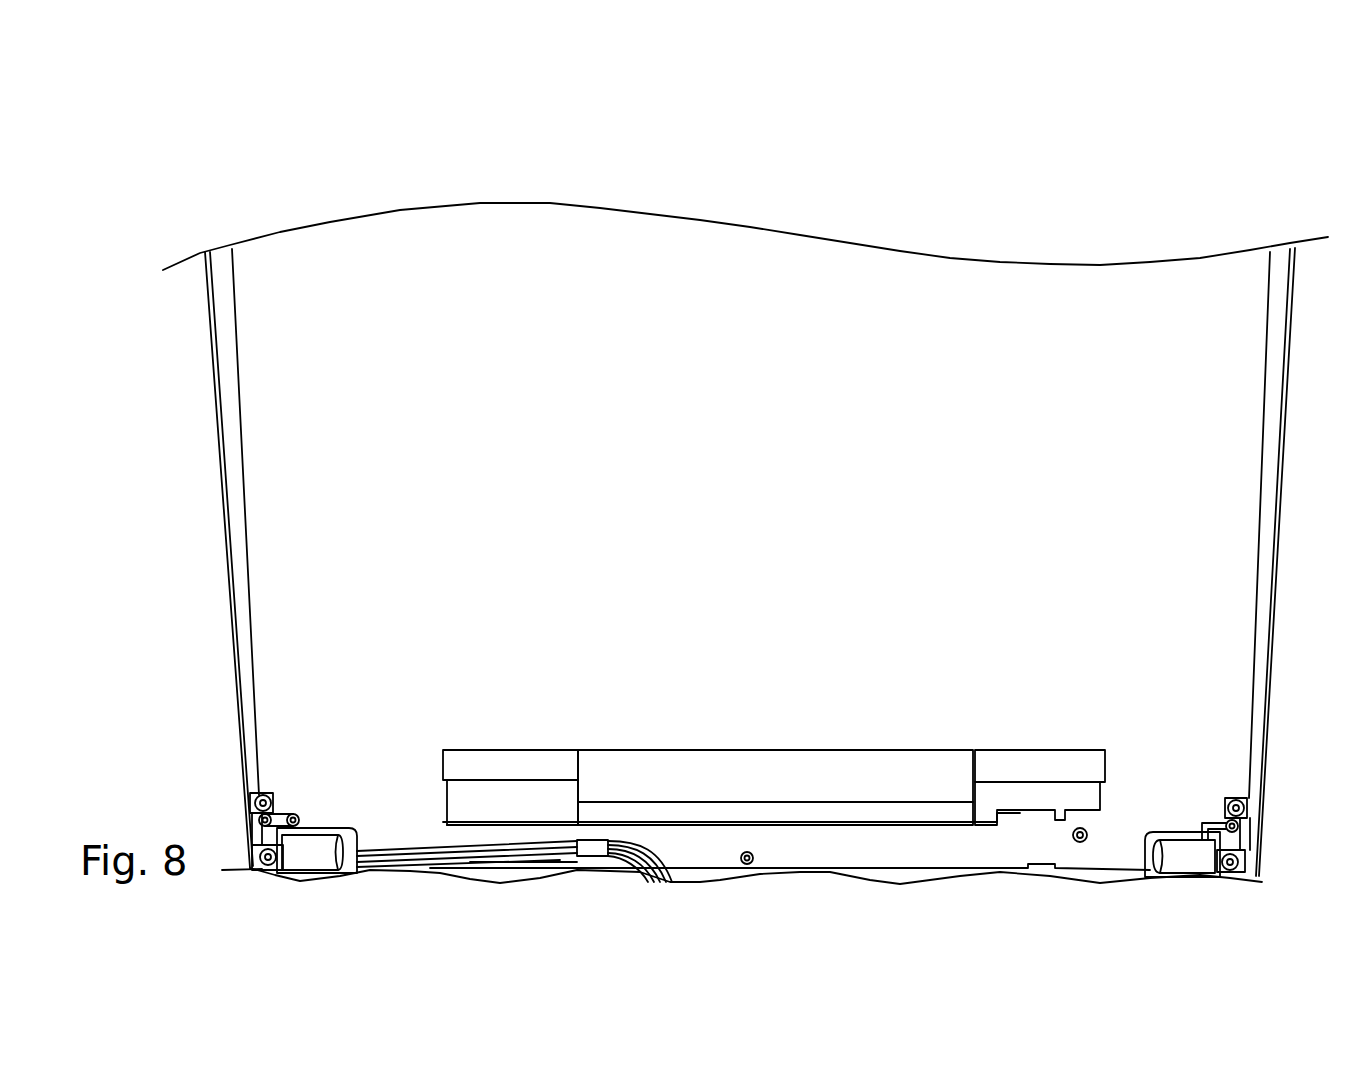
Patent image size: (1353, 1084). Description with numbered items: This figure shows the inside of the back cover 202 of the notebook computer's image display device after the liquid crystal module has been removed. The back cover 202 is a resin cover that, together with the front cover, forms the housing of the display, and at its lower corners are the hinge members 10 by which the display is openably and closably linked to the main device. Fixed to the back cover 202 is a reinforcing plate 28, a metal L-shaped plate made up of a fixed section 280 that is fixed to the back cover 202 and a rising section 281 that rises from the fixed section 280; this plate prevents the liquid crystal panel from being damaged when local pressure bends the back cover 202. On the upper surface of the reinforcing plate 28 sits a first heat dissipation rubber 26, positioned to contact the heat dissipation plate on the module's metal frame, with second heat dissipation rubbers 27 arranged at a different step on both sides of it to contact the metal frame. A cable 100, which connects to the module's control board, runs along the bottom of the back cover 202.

The back cover 202 is at (462, 247).
The hinge member 10 is at (303, 848).
The cable 100 is at (640, 863).
The first heat dissipation rubber 26 is at (763, 808).
The second heat dissipation rubber 27 is at (513, 762).
The reinforcing plate 28 is at (392, 763).
The fixed section 280 is at (472, 786).
The rising section 281 is at (484, 822).